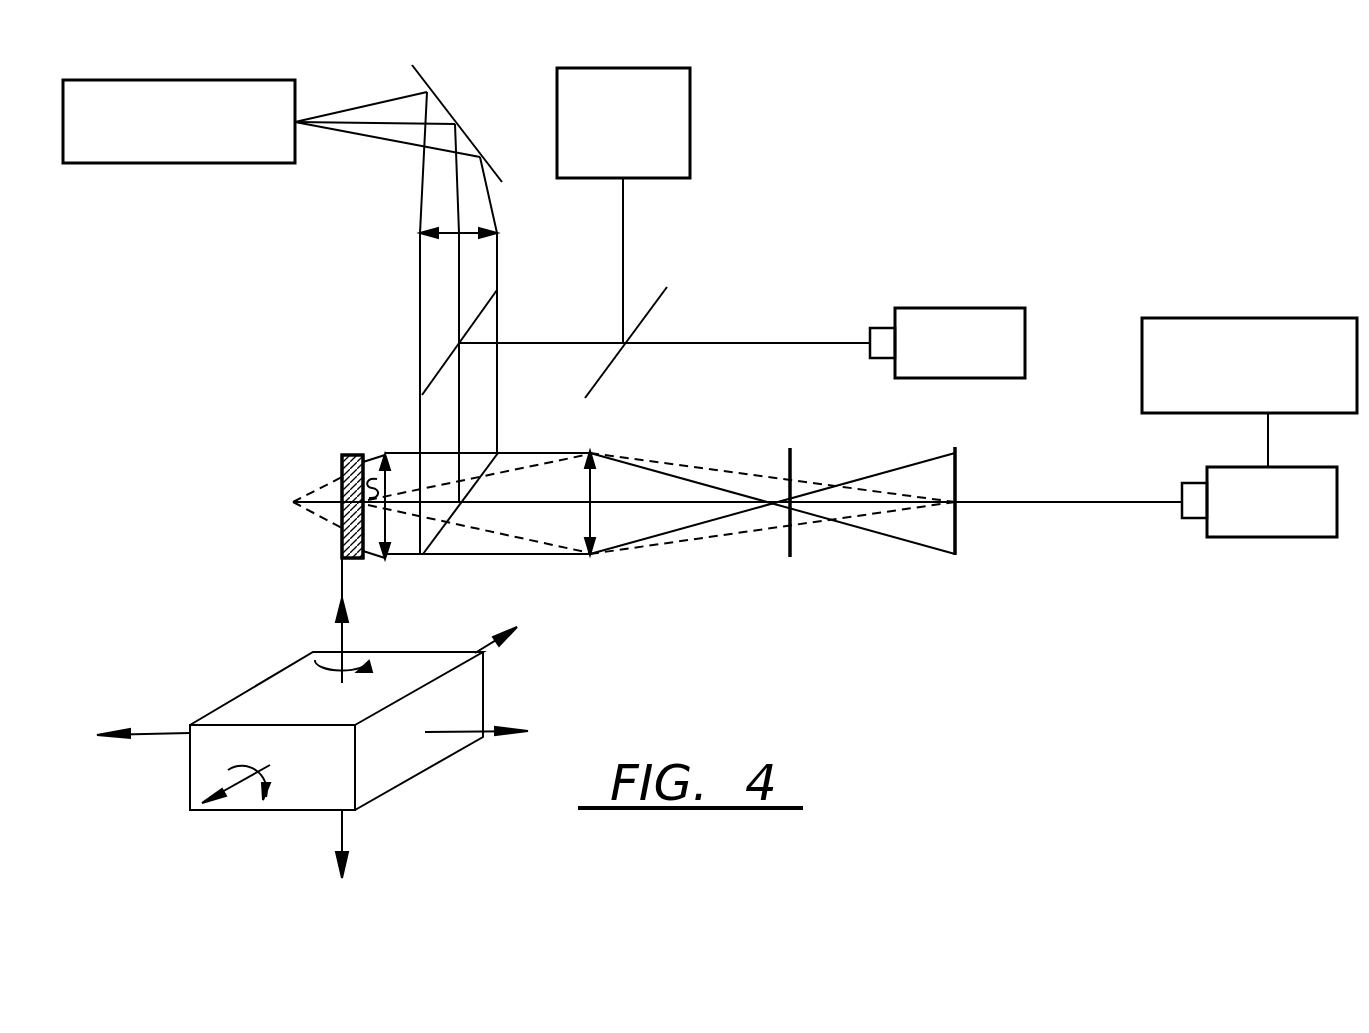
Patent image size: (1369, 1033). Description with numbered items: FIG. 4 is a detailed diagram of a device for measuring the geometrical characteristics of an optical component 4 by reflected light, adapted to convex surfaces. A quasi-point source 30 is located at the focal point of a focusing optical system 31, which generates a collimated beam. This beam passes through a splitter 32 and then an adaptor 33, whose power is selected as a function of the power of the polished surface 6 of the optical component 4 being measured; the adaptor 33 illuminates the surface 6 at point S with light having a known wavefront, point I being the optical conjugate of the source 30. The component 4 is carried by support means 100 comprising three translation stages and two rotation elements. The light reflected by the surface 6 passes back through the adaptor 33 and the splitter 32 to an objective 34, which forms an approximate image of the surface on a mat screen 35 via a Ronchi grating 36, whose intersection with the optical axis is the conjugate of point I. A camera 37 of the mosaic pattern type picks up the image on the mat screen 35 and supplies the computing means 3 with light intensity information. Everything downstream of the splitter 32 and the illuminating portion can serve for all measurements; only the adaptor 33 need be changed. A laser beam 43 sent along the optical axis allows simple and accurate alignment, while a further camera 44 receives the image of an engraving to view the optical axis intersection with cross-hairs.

The quasi-point source 30 is at (215, 80).
The focusing optical system 31 is at (463, 234).
The laser beam 43 is at (690, 120).
The camera 44 is at (1012, 307).
The computing means 3 is at (1300, 318).
The optical component 4 is at (350, 453).
The polished surface 6 is at (352, 560).
The adaptor 33 is at (386, 518).
The splitter 32 is at (443, 527).
The objective 34 is at (592, 512).
The Ronchi grating 36 is at (790, 538).
The mat screen 35 is at (958, 527).
The camera 37 is at (1255, 538).
The support means 100 is at (288, 665).